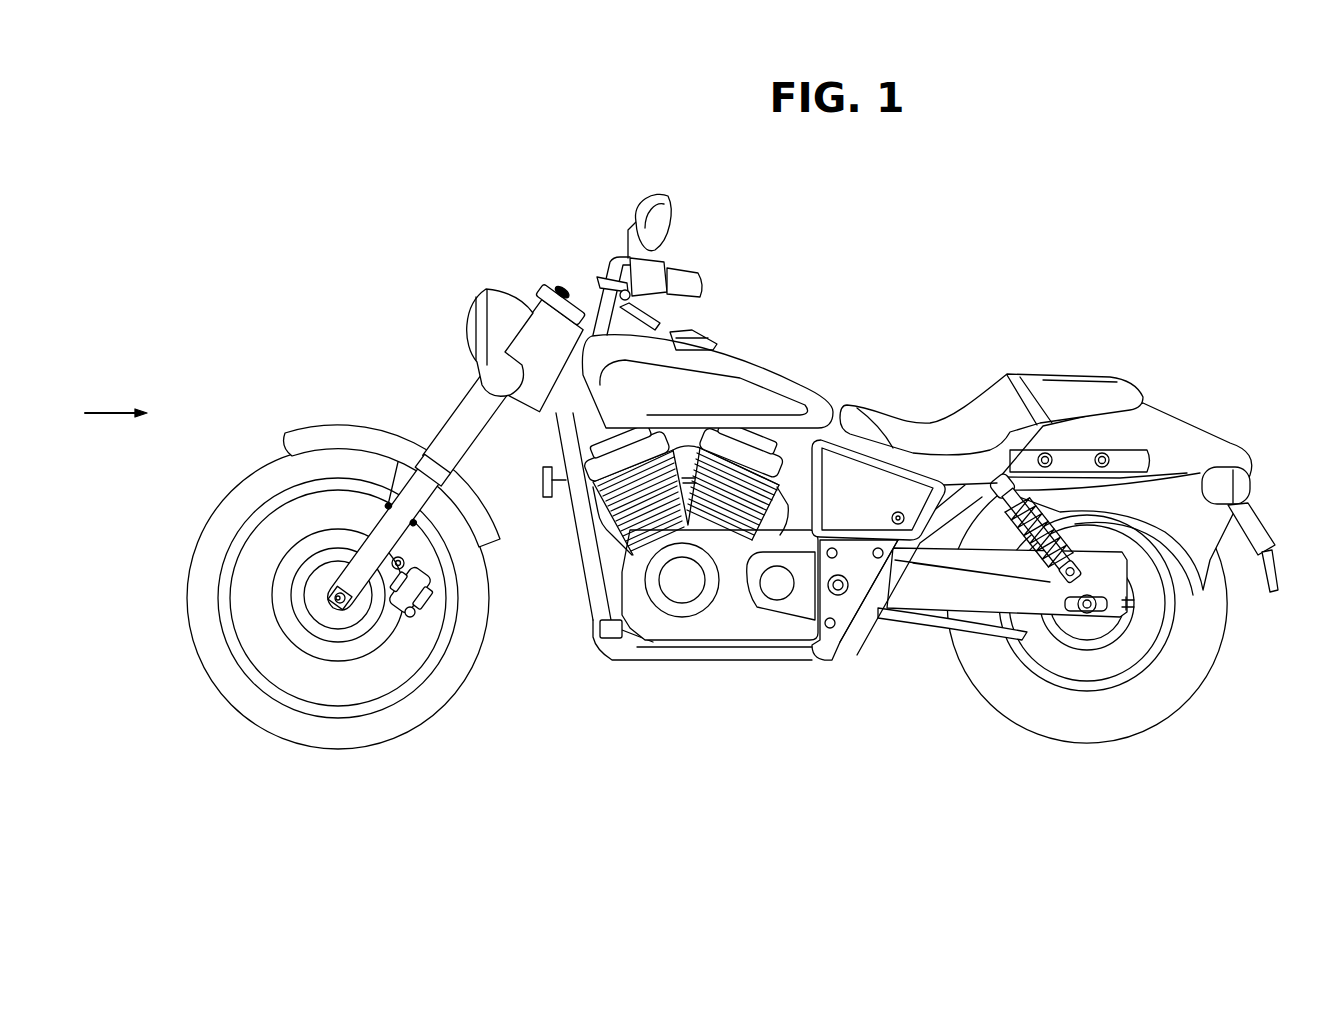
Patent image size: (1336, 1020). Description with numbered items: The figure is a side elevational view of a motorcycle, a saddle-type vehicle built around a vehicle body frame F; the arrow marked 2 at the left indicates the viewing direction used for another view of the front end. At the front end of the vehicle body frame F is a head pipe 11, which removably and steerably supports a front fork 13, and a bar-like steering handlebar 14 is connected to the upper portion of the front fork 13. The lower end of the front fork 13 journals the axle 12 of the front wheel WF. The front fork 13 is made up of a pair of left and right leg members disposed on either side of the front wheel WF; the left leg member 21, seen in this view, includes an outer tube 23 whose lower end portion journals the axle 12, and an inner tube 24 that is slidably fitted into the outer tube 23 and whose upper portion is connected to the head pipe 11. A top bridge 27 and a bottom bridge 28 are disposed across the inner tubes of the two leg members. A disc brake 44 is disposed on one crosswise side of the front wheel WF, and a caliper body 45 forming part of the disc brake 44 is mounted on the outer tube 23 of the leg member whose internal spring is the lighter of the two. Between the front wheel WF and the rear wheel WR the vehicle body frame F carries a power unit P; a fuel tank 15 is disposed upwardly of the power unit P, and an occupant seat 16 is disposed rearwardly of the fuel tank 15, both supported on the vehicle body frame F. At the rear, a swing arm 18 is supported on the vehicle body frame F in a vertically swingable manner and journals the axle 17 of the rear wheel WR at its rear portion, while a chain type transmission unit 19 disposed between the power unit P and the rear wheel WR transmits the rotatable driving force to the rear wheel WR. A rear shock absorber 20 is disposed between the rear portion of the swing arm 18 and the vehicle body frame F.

The viewing direction of FIG. 2 is at (92, 400).
The head pipe 11 is at (538, 358).
The axle 12 is at (343, 613).
The front fork 13 is at (421, 431).
The steering handlebar 14 is at (613, 263).
The fuel tank 15 is at (757, 377).
The occupant seat 16 is at (927, 440).
The axle 17 is at (1088, 613).
The swing arm 18 is at (1010, 645).
The chain type transmission unit 19 is at (938, 632).
The rear shock absorber 20 is at (1130, 477).
The left leg member 21 is at (421, 431).
The outer tube 23 is at (383, 538).
The inner tube 24 is at (471, 415).
The top bridge 27 is at (562, 301).
The bottom bridge 28 is at (506, 400).
The disc brake 44 is at (408, 618).
The caliper body 45 is at (443, 671).
The power unit P is at (618, 588).
The vehicle body frame F is at (770, 570).
The front wheel WF is at (440, 692).
The rear wheel WR is at (1190, 660).